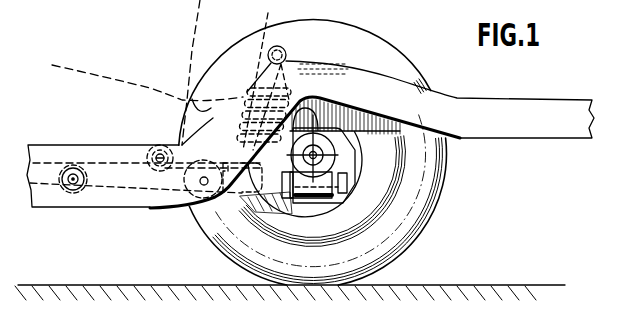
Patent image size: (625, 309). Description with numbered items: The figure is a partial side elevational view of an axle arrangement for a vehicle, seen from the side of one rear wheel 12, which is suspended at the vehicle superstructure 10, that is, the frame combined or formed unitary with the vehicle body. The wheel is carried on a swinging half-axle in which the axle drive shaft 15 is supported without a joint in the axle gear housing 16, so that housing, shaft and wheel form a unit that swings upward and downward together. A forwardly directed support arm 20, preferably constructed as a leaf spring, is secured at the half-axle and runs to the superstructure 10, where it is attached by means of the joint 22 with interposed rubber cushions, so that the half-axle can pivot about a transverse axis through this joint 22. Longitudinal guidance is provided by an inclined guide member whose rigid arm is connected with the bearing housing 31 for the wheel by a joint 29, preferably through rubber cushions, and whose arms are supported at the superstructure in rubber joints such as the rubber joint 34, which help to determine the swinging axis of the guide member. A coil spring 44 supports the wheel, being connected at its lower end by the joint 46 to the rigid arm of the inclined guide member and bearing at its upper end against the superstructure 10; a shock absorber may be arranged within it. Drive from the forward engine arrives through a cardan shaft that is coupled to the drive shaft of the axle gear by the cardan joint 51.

The vehicle superstructure 10 is at (88, 147).
The rear wheel 12 is at (433, 181).
The axle drive shaft 15 is at (336, 160).
The axle gear housing 16 is at (329, 125).
The support arm 20 is at (105, 194).
The joint 22 is at (73, 191).
The joint 29 is at (340, 186).
The bearing housing 31 is at (327, 149).
The rubber joint 34 is at (157, 151).
The coil spring 44 is at (306, 103).
The joint 46 is at (266, 194).
The cardan joint 51 is at (218, 200).